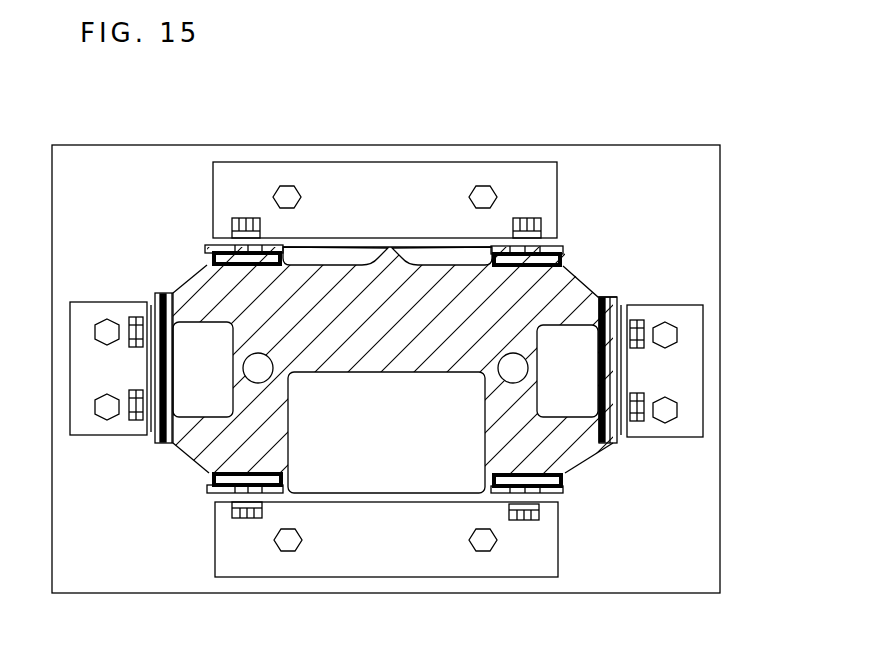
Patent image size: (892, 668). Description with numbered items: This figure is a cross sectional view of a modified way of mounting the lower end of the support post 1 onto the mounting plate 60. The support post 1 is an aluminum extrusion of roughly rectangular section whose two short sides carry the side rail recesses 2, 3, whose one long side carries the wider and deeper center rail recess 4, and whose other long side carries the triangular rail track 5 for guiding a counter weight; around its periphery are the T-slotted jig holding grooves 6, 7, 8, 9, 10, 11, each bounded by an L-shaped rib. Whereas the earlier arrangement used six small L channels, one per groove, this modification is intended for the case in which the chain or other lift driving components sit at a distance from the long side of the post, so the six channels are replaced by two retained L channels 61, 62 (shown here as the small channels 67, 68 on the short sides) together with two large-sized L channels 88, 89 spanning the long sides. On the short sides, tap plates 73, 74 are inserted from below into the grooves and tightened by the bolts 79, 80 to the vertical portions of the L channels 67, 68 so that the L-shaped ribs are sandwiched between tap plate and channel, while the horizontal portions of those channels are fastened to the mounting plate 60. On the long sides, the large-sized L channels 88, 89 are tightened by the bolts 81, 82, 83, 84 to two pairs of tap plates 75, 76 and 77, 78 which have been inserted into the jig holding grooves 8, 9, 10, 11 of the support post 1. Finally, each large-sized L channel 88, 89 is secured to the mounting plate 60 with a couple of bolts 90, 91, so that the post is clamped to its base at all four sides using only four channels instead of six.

The support post 1 is at (585, 276).
The rail recess 2 is at (566, 403).
The rail recess 3 is at (203, 395).
The center rail recess 4 is at (390, 447).
The rail track 5 is at (385, 257).
The jig holding groove 6 is at (608, 437).
The jig holding groove 7 is at (155, 443).
The jig holding groove 8 is at (486, 470).
The jig holding groove 9 is at (287, 470).
The jig holding groove 10 is at (493, 250).
The jig holding groove 11 is at (275, 250).
The mounting plate 60 is at (697, 547).
The L channel 61 is at (668, 412).
The L channel 62 is at (102, 407).
The L channel 67 is at (690, 391).
The L channel 68 is at (92, 367).
The tap plate 73 is at (685, 370).
The tap plate 74 is at (80, 356).
The tap plate 75 is at (550, 520).
The tap plate 76 is at (226, 528).
The tap plate 77 is at (551, 222).
The tap plate 78 is at (232, 253).
The bolt 79 is at (637, 333).
The bolt 80 is at (137, 316).
The bolt 81 is at (530, 520).
The bolt 82 is at (245, 518).
The bolt 83 is at (528, 218).
The bolt 84 is at (245, 218).
The large-sized L channel 88 is at (405, 555).
The large-sized L channel 89 is at (400, 175).
The bolt 90 is at (288, 545).
The bolt 91 is at (288, 195).